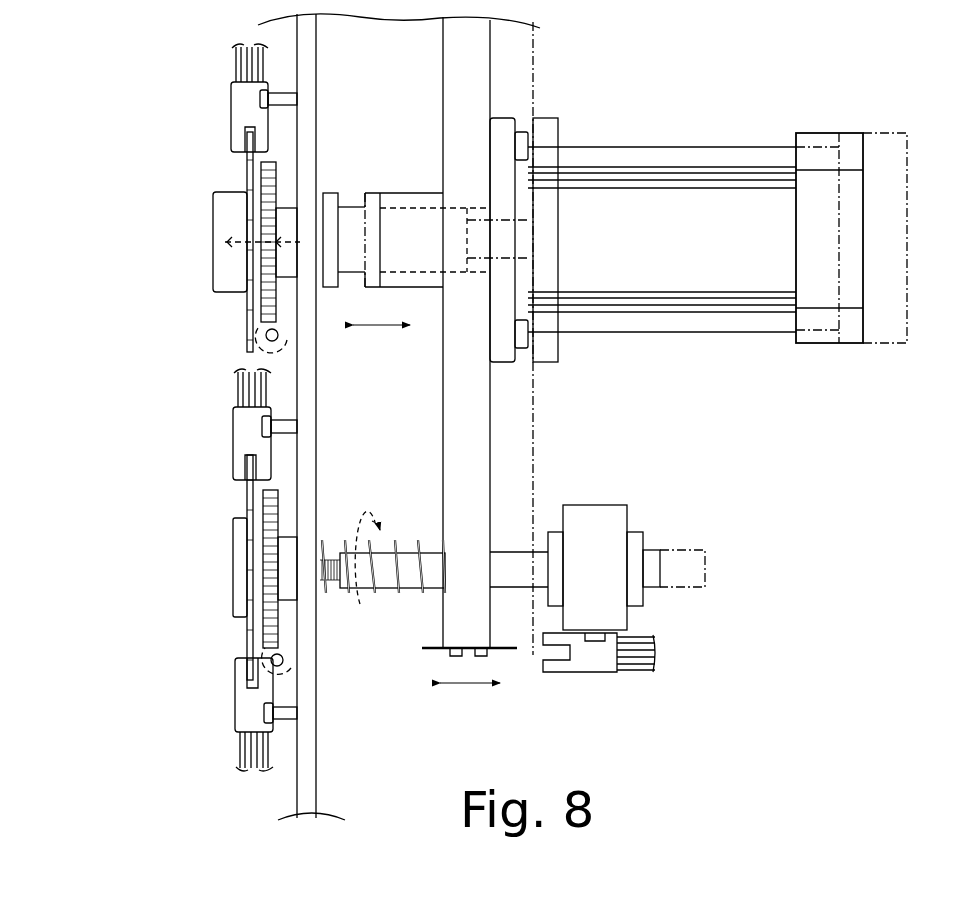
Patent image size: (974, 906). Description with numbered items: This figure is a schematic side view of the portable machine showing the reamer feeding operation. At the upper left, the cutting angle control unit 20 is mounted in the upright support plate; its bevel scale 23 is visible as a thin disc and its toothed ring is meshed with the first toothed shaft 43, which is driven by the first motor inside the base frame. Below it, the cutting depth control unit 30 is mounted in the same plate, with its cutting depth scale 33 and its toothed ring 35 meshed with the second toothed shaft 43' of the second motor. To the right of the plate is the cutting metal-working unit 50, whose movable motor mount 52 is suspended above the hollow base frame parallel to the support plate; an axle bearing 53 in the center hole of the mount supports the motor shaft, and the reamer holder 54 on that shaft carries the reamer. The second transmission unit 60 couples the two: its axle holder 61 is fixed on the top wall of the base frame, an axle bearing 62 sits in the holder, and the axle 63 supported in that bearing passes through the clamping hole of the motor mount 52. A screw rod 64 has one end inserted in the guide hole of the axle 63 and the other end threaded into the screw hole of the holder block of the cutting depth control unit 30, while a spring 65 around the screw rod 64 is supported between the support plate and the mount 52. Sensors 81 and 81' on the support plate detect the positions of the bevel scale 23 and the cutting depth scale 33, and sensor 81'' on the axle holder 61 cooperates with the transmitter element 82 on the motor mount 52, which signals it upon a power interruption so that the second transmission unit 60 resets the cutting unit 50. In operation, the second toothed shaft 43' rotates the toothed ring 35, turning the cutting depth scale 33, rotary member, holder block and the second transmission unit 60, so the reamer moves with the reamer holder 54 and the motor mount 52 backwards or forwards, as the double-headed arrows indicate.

The cutting angle control unit 20 is at (207, 226).
The bevel scale 23 is at (248, 320).
The cutting depth control unit 30 is at (220, 593).
The cutting depth scale 33 is at (250, 624).
The toothed ring 35 is at (270, 602).
The first toothed shaft 43 is at (326, 357).
The second toothed shaft 43' is at (335, 677).
The cutting metal-working unit 50 is at (681, 125).
The motor mount 52 is at (473, 85).
The axle bearing 53 is at (352, 216).
The reamer holder 54 is at (308, 235).
The second transmission unit 60 is at (728, 583).
The axle holder 61 is at (593, 517).
The axle bearing 62 is at (633, 593).
The axle 63 is at (653, 558).
The screw rod 64 is at (328, 545).
The spring 65 is at (398, 545).
The sensor 81 is at (233, 98).
The sensor 81' is at (233, 570).
The sensor 81'' is at (600, 682).
The transmitter element 82 is at (497, 650).